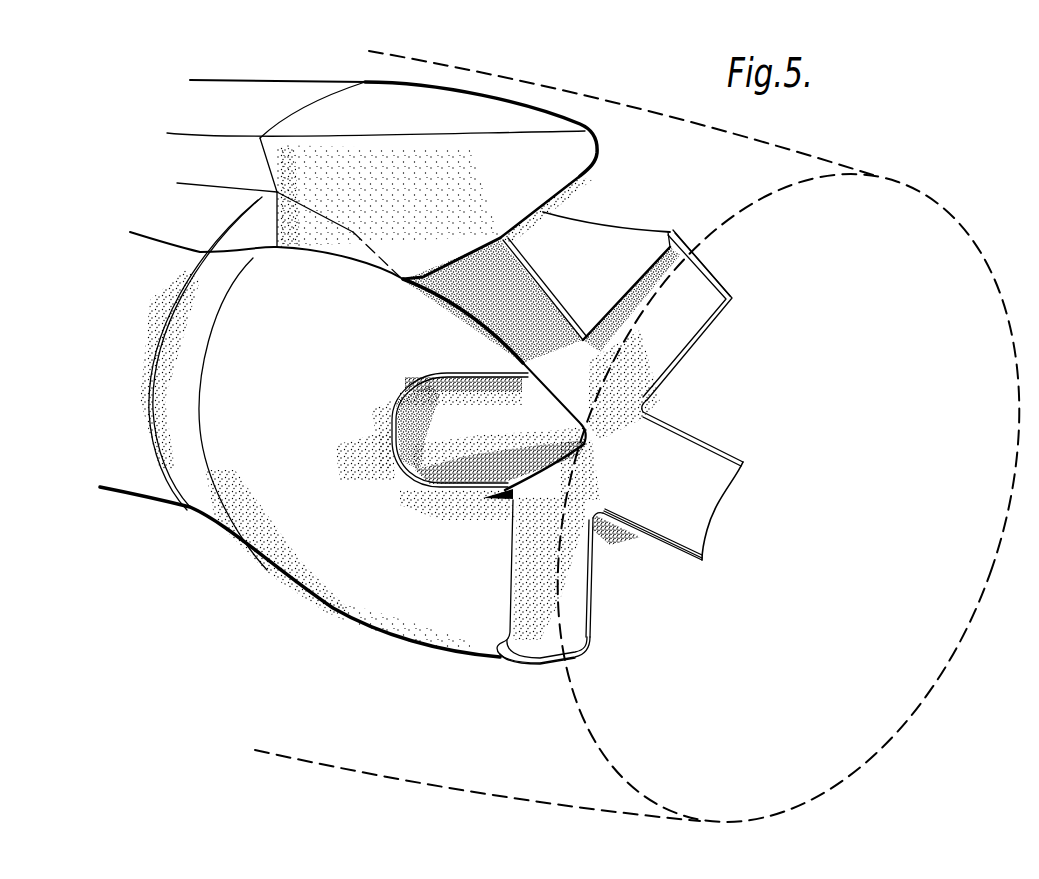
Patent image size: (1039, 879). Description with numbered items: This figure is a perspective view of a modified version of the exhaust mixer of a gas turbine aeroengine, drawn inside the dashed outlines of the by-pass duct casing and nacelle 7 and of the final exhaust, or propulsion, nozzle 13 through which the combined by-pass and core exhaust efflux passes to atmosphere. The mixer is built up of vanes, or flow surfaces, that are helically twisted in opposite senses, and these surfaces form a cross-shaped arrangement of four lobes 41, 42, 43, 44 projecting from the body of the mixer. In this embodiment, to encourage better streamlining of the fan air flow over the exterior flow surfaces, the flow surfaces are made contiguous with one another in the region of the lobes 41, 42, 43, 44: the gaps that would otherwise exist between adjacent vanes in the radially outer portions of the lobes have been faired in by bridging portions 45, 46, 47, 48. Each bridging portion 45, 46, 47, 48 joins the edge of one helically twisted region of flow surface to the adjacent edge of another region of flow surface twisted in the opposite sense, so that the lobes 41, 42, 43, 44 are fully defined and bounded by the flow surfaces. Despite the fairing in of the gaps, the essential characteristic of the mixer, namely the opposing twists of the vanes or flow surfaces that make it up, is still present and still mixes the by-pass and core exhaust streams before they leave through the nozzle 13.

The by-pass duct casing and nacelle 7 is at (768, 138).
The final exhaust nozzle 13 is at (1014, 352).
The lobe 41 is at (673, 514).
The lobe 42 is at (566, 620).
The lobe 43 is at (444, 428).
The lobe 44 is at (665, 329).
The bridging portion 45 is at (717, 273).
The bridging portion 46 is at (712, 510).
The bridging portion 47 is at (547, 665).
The bridging portion 48 is at (397, 402).